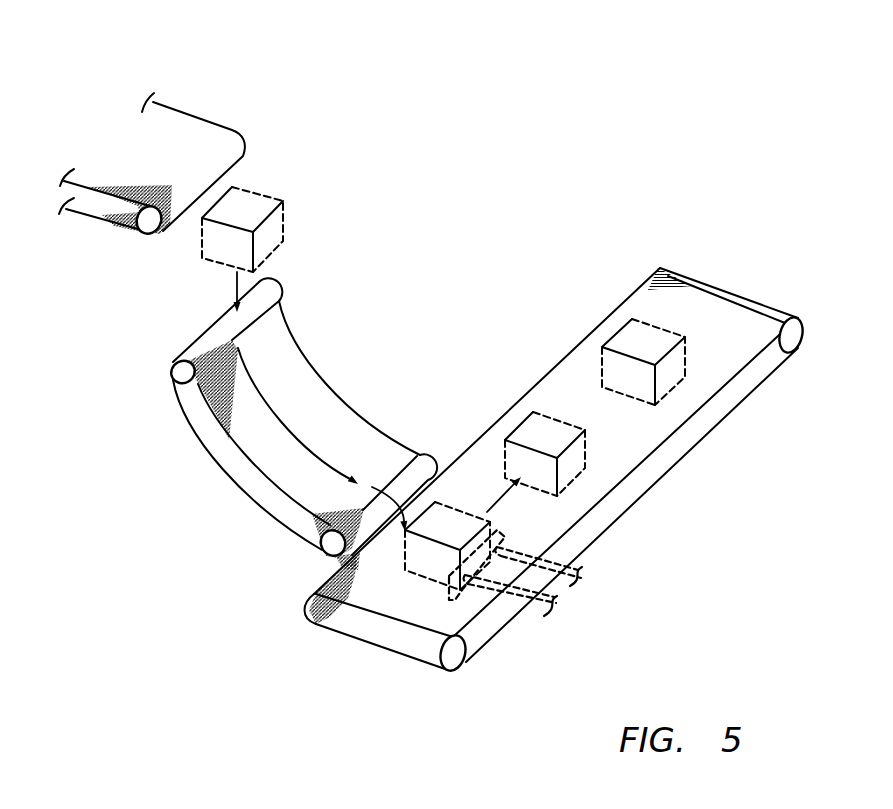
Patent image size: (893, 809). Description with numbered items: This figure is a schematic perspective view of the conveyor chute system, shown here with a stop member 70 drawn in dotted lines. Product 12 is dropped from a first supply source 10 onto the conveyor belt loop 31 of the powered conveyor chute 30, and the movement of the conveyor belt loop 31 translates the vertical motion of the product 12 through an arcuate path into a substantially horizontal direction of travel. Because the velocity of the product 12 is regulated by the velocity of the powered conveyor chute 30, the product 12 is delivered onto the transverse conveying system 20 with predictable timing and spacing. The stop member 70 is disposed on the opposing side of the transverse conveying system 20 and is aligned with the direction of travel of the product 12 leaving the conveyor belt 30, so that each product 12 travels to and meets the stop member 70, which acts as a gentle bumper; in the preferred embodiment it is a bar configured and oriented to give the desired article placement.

The first supply source 10 is at (202, 93).
The product 12 is at (253, 195).
The transverse conveying system 20 is at (331, 677).
The powered conveyor chute 30 is at (302, 418).
The conveyor belt loop 31 is at (350, 423).
The stop member 70 is at (497, 615).